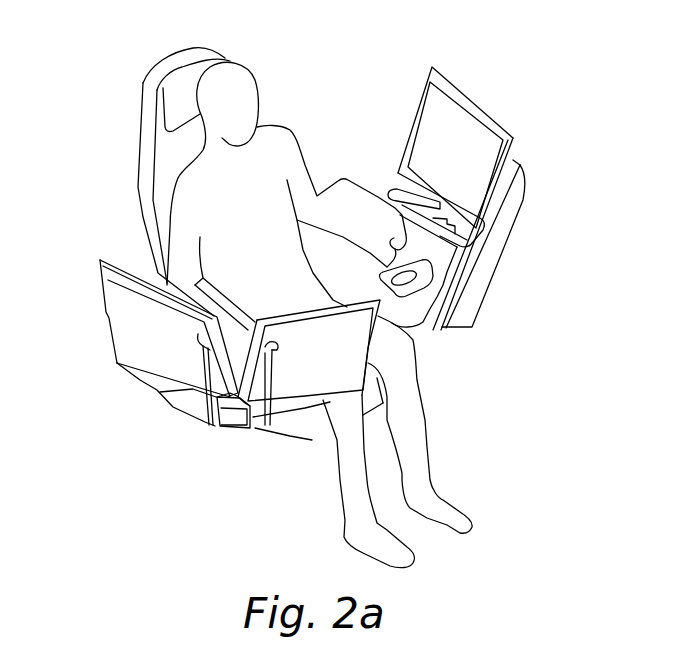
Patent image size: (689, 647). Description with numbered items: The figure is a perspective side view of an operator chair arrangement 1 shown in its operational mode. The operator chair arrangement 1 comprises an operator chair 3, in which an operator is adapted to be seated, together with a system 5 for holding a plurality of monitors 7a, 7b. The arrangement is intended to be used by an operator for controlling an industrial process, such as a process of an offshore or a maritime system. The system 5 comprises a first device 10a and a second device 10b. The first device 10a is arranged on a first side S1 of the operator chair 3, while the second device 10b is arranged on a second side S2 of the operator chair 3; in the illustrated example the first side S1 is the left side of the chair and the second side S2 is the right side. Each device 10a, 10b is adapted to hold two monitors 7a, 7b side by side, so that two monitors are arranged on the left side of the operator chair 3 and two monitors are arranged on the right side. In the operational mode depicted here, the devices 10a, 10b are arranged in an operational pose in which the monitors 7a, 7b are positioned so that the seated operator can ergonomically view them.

The operator chair arrangement 1 is at (70, 58).
The operator chair 3 is at (147, 192).
The system for holding a plurality of monitors 5 is at (162, 440).
The monitor 7a is at (497, 212).
The monitor 7b is at (463, 127).
The first device 10a is at (467, 360).
The second device 10b is at (253, 462).
The first side S1 is at (510, 303).
The second side S2 is at (208, 458).